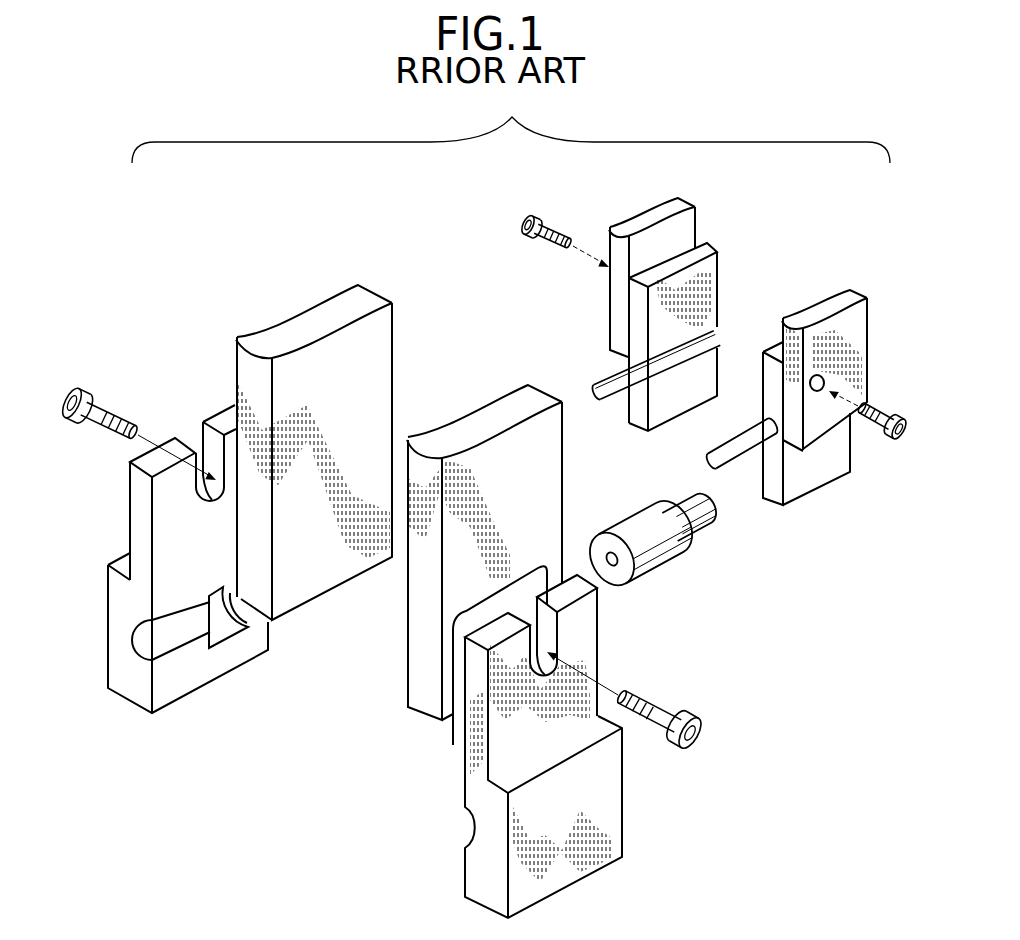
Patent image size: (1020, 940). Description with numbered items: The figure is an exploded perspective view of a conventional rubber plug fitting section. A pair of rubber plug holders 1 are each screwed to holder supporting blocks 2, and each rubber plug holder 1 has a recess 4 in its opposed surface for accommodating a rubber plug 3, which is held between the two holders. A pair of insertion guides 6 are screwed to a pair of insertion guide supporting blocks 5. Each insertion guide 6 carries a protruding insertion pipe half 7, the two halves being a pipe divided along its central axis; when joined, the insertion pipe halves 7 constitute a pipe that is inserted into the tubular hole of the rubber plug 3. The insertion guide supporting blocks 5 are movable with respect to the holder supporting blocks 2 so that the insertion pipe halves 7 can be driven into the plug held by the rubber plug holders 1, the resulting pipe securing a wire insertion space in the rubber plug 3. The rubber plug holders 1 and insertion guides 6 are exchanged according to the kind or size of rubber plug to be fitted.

The rubber plug holder 1 is at (185, 683).
The supporting block 2 is at (385, 343).
The rubber plug 3 is at (665, 563).
The recess 4 is at (223, 628).
The insertion guide supporting block 5 is at (675, 232).
The insertion guide 6 is at (662, 413).
The insertion pipe half 7 is at (602, 382).